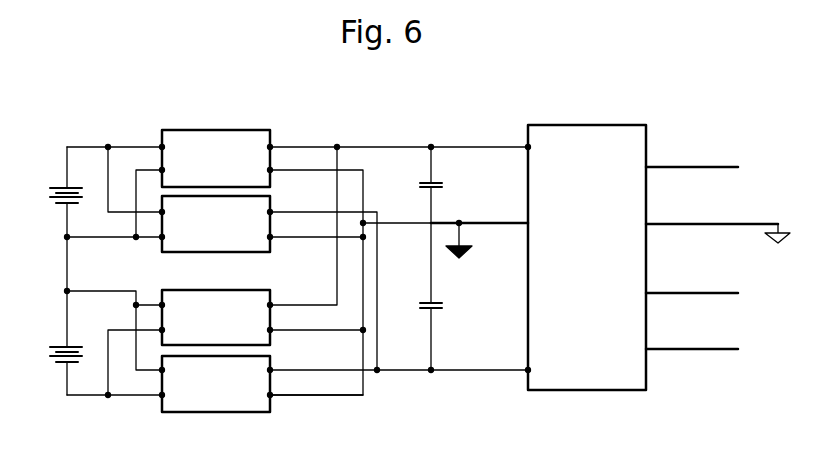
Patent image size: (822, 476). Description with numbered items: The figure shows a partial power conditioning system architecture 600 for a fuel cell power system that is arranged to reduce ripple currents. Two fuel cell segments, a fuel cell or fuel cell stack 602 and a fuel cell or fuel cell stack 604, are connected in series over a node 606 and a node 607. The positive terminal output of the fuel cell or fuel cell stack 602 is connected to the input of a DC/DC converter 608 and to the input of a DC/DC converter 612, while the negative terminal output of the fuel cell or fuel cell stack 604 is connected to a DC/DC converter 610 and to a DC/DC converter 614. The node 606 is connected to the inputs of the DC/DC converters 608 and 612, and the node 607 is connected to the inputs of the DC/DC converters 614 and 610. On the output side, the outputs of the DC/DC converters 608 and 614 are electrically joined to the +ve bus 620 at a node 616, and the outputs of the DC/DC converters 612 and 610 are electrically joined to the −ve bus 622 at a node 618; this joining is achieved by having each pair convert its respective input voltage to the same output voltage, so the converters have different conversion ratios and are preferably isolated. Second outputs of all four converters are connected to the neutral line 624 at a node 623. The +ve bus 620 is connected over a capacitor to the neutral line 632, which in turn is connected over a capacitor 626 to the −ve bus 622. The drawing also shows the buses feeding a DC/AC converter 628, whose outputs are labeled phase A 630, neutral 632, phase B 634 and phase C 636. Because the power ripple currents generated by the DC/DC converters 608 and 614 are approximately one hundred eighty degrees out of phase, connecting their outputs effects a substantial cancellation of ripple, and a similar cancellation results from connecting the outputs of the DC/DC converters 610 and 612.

The partial power conditioning system architecture 600 is at (64, 116).
The fuel cell or fuel cell stack 602 is at (44, 178).
The fuel cell or fuel cell stack 604 is at (44, 337).
The node 606 is at (64, 237).
The node 607 is at (66, 291).
The DC/DC converter 608 is at (216, 130).
The DC/DC converter 610 is at (214, 412).
The DC/DC converter 612 is at (209, 254).
The DC/DC converter 614 is at (227, 290).
The node 616 is at (318, 146).
The node 618 is at (316, 396).
The +ve bus 620 is at (441, 186).
The −ve bus 622 is at (441, 306).
The node 623 is at (362, 224).
The neutral line 624 is at (496, 227).
The capacitor 626 is at (465, 372).
The DC/AC converter 628 is at (600, 169).
The phase A output 630 is at (744, 156).
The neutral line 632 is at (744, 212).
The phase B output 634 is at (744, 284).
The phase C output 636 is at (744, 340).